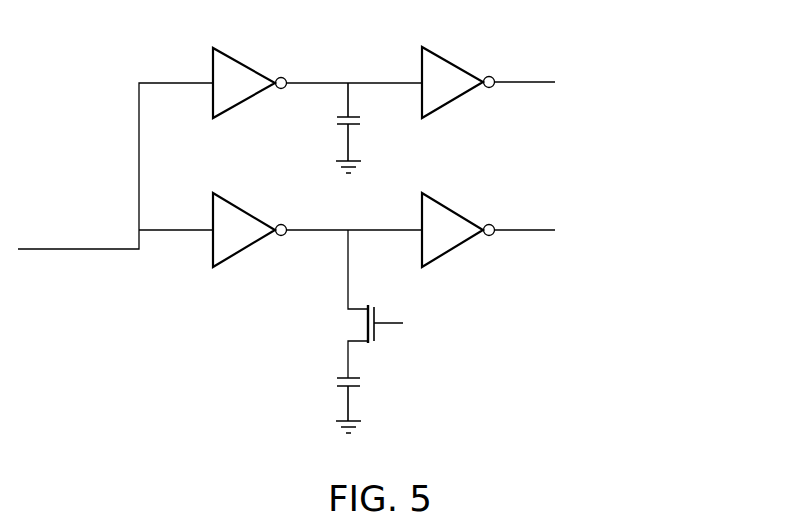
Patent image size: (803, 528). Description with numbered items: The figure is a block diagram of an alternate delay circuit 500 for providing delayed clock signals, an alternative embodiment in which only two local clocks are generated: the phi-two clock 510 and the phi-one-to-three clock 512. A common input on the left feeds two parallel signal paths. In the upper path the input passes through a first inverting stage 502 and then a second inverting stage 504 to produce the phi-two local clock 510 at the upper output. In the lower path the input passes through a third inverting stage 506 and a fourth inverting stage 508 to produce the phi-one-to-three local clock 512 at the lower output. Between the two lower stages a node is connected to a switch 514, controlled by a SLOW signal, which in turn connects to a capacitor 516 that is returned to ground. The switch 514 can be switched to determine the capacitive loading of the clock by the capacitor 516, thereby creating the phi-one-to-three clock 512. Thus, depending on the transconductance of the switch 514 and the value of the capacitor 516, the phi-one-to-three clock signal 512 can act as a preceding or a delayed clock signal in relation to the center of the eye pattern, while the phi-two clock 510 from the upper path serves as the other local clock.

The clock driver circuit 500 is at (693, 150).
The first inverter 502 is at (245, 62).
The second inverter 504 is at (452, 62).
The third inverter 506 is at (245, 210).
The fourth inverter 508 is at (452, 210).
The local clock φ2 510 is at (592, 76).
The local clock φ1-3 512 is at (594, 222).
The switch 514 is at (383, 335).
The capacitor 516 is at (335, 386).